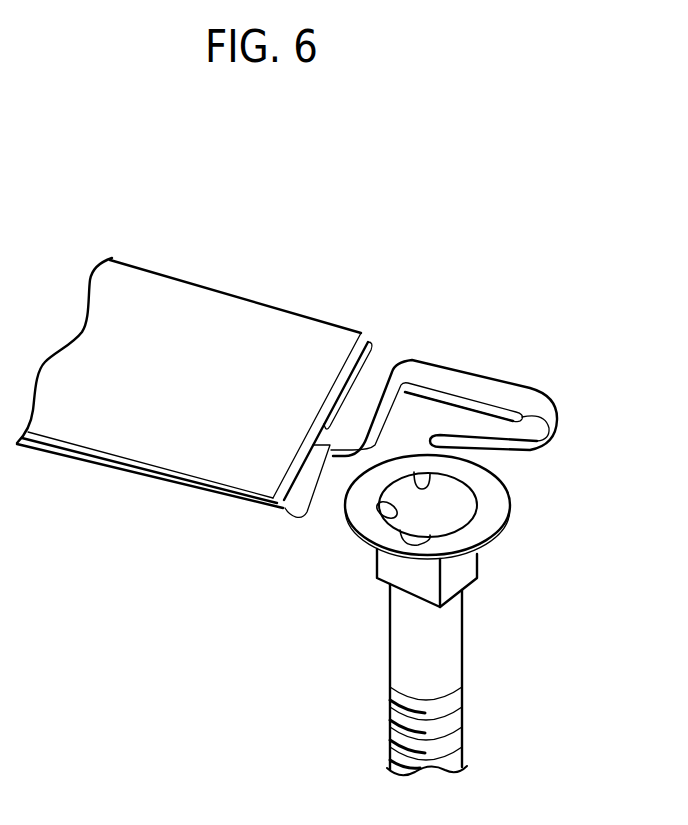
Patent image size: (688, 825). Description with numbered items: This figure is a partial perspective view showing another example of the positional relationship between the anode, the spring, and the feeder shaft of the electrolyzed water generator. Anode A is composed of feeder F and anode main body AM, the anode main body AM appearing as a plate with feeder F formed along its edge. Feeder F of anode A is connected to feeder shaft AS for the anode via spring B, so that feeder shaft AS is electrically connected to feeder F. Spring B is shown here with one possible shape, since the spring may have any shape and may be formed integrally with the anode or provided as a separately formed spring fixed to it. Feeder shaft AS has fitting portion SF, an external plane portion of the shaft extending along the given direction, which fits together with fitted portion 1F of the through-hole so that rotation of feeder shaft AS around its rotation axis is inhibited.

The anode A is at (182, 200).
The anode main body AM is at (253, 337).
The feeder F is at (365, 344).
The spring B is at (422, 372).
The fitted portion 1F is at (427, 482).
The fitting portion SF is at (430, 540).
The feeder shaft AS is at (455, 513).